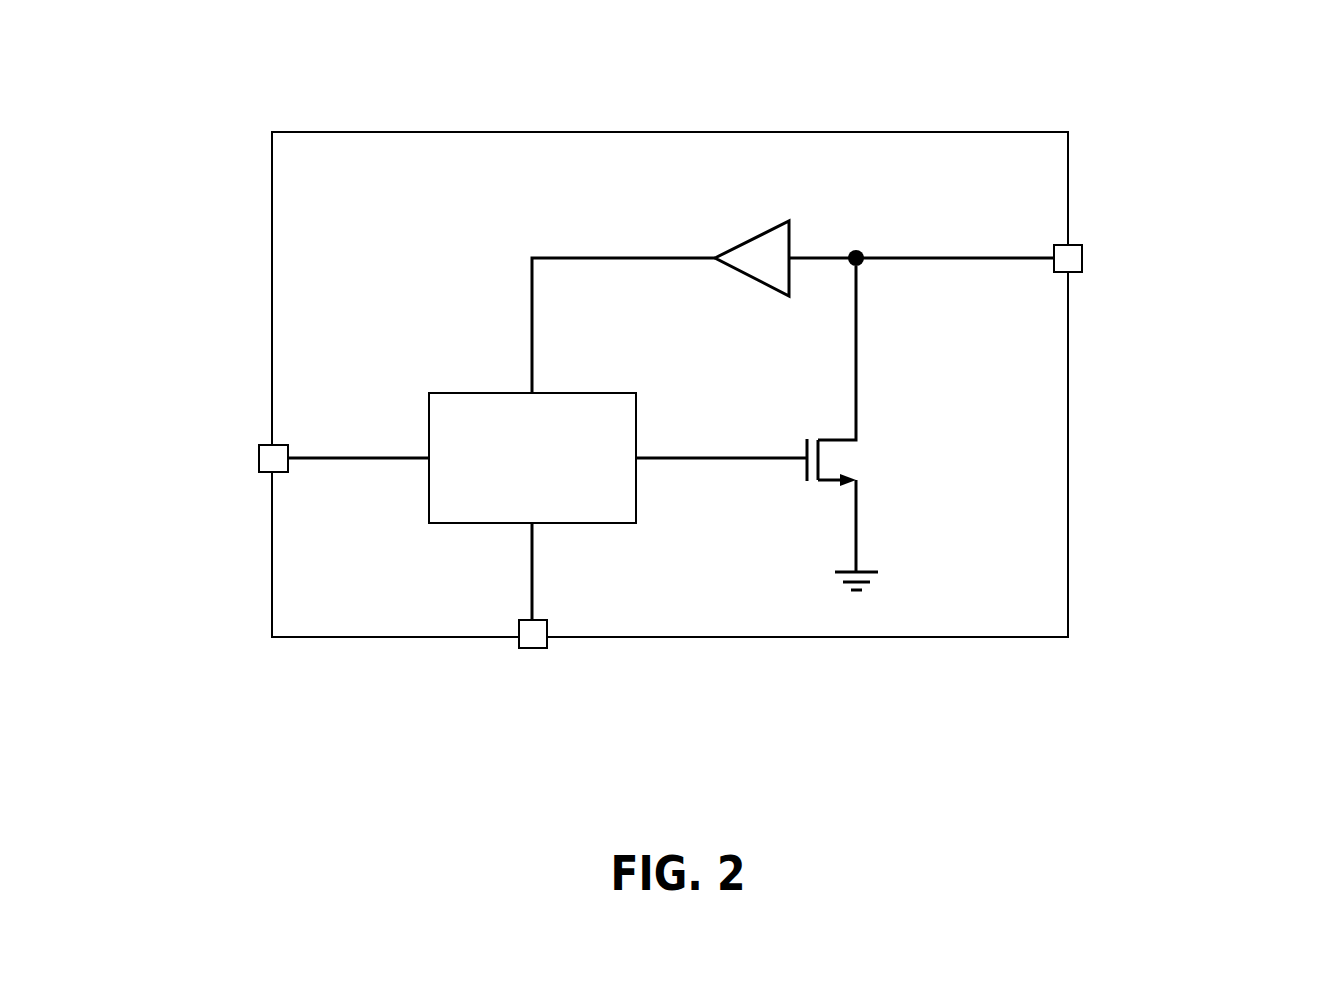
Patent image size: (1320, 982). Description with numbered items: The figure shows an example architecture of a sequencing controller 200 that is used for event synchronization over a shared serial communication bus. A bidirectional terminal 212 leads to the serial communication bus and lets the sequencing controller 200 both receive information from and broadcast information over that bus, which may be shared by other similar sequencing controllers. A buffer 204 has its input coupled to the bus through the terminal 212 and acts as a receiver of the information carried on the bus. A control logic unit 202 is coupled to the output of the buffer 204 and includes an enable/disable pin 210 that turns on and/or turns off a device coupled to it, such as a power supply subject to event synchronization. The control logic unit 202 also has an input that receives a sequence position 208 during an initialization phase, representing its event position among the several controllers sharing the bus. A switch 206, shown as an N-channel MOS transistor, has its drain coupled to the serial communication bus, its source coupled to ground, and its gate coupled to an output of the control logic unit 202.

The sequencing controller 200 is at (196, 58).
The control logic unit 202 is at (585, 393).
The buffer 204 is at (755, 236).
The switch 206 is at (837, 458).
The sequence position 208 is at (538, 652).
The enable/disable pin 210 is at (263, 462).
The bidirectional terminal 212 is at (1074, 244).